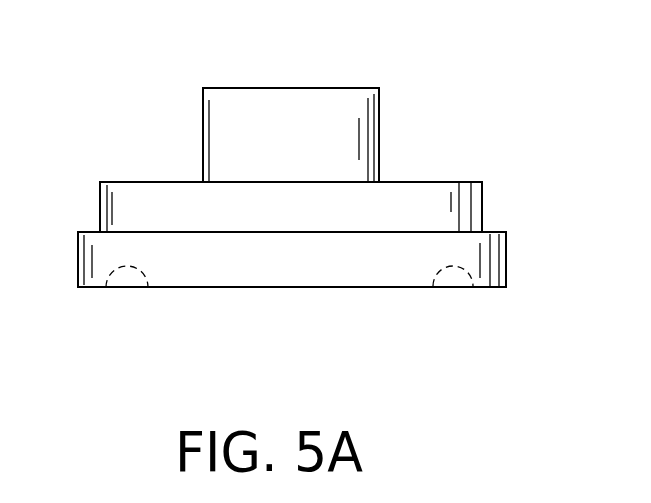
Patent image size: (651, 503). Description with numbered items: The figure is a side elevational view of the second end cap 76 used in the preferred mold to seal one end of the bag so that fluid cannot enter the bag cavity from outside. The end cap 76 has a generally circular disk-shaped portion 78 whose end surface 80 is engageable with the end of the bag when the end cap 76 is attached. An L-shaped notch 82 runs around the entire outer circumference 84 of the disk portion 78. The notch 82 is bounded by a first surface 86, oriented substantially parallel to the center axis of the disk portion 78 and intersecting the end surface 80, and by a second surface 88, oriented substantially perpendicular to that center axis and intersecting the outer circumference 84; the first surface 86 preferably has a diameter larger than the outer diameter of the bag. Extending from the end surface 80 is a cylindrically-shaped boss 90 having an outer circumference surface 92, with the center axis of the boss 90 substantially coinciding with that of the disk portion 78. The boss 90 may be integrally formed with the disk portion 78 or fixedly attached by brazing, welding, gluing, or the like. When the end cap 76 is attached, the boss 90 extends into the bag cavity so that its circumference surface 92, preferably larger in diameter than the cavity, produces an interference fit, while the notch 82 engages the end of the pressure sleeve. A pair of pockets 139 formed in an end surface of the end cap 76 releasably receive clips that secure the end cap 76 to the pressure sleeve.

The second end cap 76 is at (247, 305).
The disk-shaped portion 78 is at (507, 256).
The end surface 80 is at (431, 182).
The L-shaped notch 82 is at (506, 181).
The outer circumference 84 is at (78, 258).
The first surface of notch 86 is at (100, 201).
The second surface of notch 88 is at (96, 232).
The cylindrically-shaped boss 90 is at (367, 73).
The outer circumference surface 92 is at (203, 135).
The pockets 139 is at (127, 287).